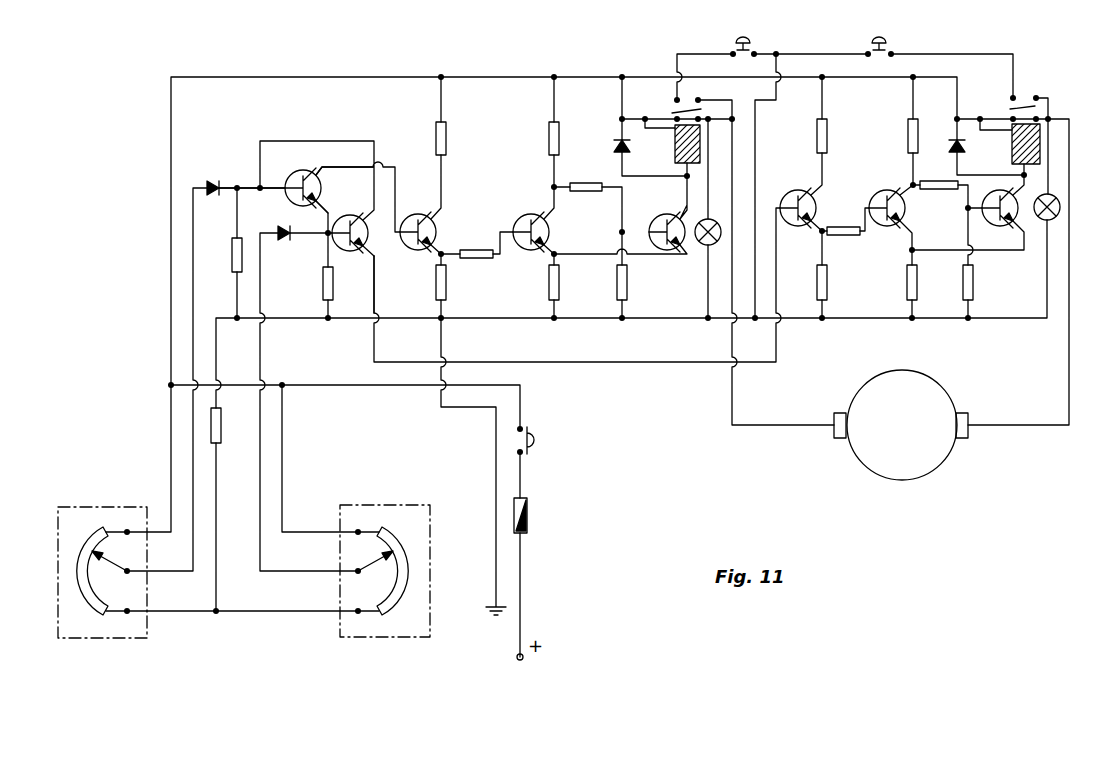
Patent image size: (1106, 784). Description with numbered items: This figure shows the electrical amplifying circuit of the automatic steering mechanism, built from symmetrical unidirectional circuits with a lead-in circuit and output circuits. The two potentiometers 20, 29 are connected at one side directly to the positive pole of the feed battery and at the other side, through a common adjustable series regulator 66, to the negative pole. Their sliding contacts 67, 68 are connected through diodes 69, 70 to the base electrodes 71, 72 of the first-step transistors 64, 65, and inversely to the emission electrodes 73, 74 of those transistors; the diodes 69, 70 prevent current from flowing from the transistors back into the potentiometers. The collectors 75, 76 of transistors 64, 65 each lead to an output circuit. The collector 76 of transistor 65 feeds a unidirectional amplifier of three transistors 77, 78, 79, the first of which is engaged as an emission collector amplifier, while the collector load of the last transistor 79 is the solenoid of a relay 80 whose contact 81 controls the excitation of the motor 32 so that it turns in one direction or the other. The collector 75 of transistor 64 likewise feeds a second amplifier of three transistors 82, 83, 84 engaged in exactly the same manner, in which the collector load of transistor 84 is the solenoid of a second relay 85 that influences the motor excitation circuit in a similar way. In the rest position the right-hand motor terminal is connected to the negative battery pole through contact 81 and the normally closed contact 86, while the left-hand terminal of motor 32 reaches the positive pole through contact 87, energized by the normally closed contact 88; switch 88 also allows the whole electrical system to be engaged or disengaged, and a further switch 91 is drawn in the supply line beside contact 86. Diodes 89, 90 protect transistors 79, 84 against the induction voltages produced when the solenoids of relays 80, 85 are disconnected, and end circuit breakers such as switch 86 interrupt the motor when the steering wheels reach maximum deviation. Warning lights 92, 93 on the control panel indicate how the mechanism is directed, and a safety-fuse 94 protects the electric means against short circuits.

The potentiometer 20 is at (86, 506).
The potentiometer 29 is at (416, 505).
The motor 32 is at (928, 466).
The transistor 64 is at (298, 170).
The transistor 65 is at (340, 266).
The adjustable series regulator 66 is at (221, 422).
The sliding contact 67 is at (118, 566).
The sliding contact 68 is at (366, 566).
The diode 69 is at (213, 180).
The diode 70 is at (284, 242).
The base electrode 71 is at (278, 195).
The base electrode 72 is at (348, 216).
The emission electrode 73 is at (326, 204).
The emission electrode 74 is at (379, 239).
The collector 75 is at (320, 164).
The collector 76 is at (378, 290).
The transistor 77 is at (797, 190).
The transistor 78 is at (886, 190).
The transistor 79 is at (990, 224).
The relay 80 is at (1011, 148).
The contact 81 is at (1044, 106).
The transistor 82 is at (437, 228).
The transistor 83 is at (551, 228).
The transistor 84 is at (668, 213).
The relay 85 is at (675, 155).
The normally closed contact 86 is at (891, 48).
The contact 87 is at (668, 110).
The normally closed contact 88 is at (535, 424).
The diode 89 is at (948, 152).
The diode 90 is at (613, 147).
The pushbutton switch 91 is at (755, 48).
The warning light 92 is at (1060, 208).
The warning light 93 is at (702, 245).
The safety-fuse 94 is at (528, 518).